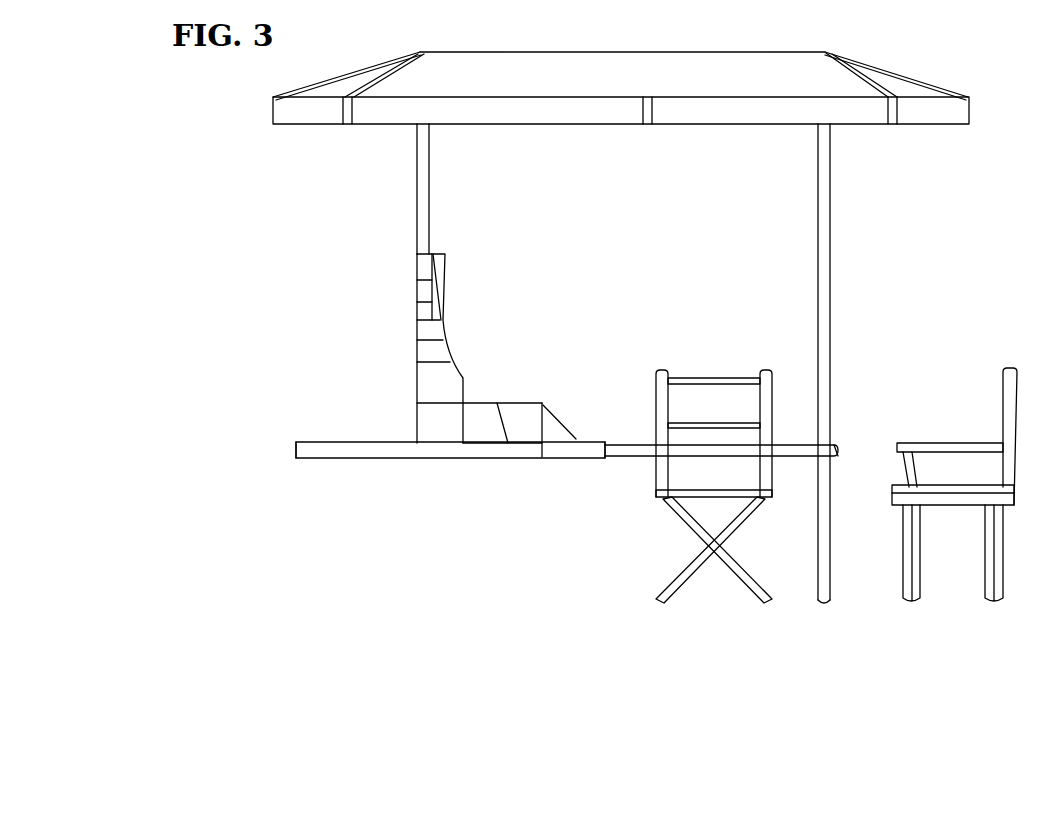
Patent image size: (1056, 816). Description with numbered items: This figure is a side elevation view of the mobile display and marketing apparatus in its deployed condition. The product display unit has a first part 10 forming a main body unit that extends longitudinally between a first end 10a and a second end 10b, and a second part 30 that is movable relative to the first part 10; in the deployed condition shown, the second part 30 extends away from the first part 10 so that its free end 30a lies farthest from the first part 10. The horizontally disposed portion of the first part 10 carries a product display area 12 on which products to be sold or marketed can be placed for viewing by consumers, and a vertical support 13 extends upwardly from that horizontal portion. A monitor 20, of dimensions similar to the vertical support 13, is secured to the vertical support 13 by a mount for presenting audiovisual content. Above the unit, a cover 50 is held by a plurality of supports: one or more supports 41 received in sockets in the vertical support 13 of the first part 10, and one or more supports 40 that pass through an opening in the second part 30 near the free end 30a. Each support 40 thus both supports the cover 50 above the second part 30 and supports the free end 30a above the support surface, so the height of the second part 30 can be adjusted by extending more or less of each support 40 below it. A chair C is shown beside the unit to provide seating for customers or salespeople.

The cover 50 is at (672, 70).
The supports 41 is at (430, 206).
The supports 40 is at (830, 247).
The vertical support 13 is at (427, 352).
The monitor 20 is at (446, 284).
The product display area 12 is at (583, 430).
The first part 10 is at (425, 458).
The first end 10a is at (296, 452).
The second end 10b is at (610, 444).
The second part 30 is at (690, 460).
The free end 30a is at (840, 449).
The chair C is at (723, 379).